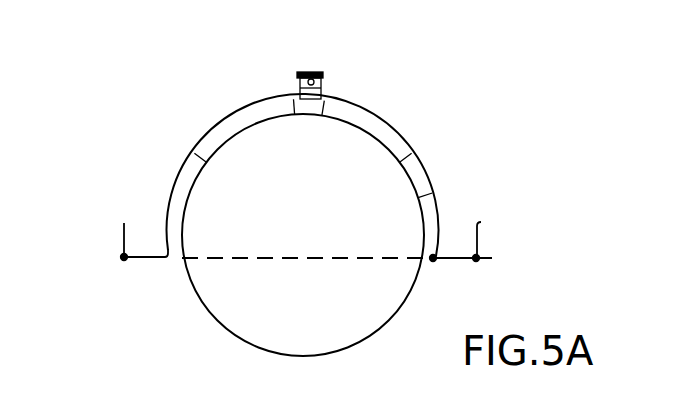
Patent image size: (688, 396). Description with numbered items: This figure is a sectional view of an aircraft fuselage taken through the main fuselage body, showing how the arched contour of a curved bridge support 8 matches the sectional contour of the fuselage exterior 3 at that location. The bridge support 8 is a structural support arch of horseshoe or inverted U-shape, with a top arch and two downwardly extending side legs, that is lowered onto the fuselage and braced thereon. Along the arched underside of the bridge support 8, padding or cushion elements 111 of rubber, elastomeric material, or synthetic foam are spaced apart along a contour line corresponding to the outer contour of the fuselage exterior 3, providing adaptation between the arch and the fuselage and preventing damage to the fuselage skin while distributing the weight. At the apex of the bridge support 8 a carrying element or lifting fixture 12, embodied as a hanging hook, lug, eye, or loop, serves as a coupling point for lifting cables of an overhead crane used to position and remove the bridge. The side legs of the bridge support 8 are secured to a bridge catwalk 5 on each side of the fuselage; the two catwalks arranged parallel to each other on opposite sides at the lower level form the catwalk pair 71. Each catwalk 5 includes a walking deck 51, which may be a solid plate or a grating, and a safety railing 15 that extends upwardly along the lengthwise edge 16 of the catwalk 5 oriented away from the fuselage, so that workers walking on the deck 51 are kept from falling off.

The fuselage exterior 3 is at (401, 324).
The bridge support 8 is at (392, 111).
The padding or cushion element 111 is at (434, 155).
The carrying element or lifting fixture 12 is at (339, 72).
The catwalk pair 71 is at (430, 231).
The bridge catwalk 5 is at (455, 263).
The walking deck 51 is at (455, 243).
The safety railing 15 is at (481, 222).
The lengthwise edge 16 is at (495, 254).